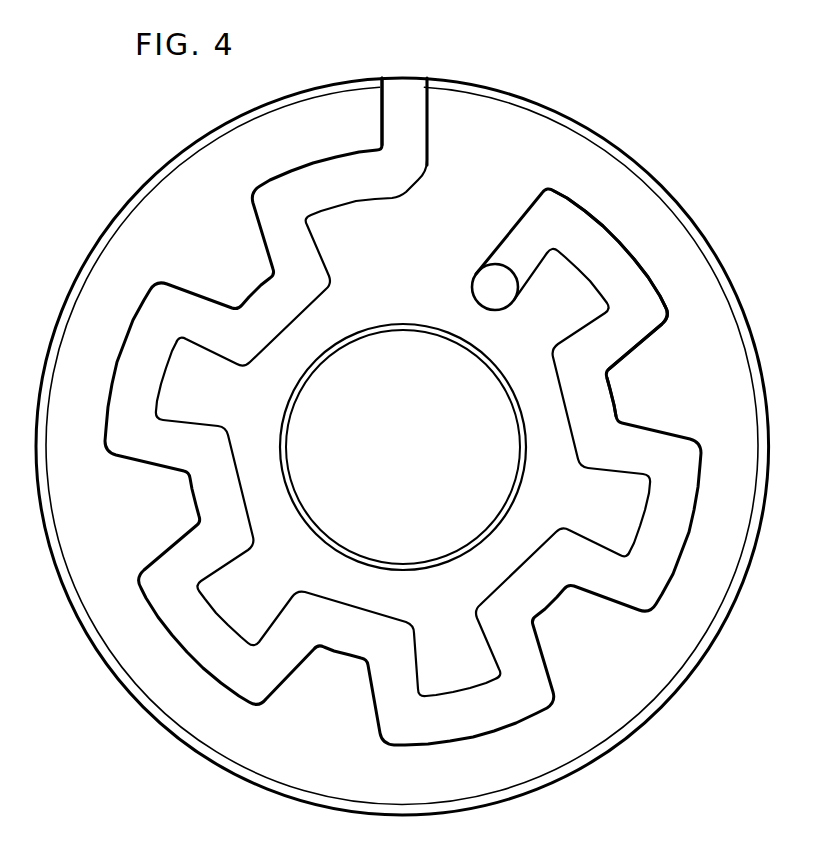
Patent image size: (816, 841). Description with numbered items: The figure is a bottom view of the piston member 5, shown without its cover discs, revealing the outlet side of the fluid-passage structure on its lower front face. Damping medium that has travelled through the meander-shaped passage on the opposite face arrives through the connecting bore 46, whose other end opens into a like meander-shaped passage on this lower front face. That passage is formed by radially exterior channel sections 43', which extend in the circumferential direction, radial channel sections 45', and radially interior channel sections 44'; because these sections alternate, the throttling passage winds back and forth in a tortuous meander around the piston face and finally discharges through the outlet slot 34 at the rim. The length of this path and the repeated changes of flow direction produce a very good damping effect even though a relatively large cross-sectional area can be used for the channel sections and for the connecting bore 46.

The piston member 5 is at (498, 120).
The outlet slot 34 is at (405, 100).
The bore 46 is at (474, 280).
The radially exterior channel sections 43' is at (636, 232).
The radial channel sections 45' is at (665, 338).
The radially interior channel sections 44' is at (640, 401).